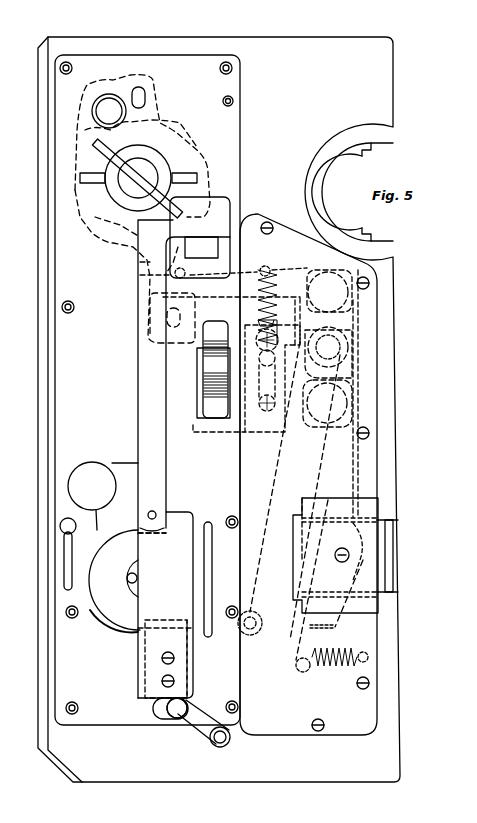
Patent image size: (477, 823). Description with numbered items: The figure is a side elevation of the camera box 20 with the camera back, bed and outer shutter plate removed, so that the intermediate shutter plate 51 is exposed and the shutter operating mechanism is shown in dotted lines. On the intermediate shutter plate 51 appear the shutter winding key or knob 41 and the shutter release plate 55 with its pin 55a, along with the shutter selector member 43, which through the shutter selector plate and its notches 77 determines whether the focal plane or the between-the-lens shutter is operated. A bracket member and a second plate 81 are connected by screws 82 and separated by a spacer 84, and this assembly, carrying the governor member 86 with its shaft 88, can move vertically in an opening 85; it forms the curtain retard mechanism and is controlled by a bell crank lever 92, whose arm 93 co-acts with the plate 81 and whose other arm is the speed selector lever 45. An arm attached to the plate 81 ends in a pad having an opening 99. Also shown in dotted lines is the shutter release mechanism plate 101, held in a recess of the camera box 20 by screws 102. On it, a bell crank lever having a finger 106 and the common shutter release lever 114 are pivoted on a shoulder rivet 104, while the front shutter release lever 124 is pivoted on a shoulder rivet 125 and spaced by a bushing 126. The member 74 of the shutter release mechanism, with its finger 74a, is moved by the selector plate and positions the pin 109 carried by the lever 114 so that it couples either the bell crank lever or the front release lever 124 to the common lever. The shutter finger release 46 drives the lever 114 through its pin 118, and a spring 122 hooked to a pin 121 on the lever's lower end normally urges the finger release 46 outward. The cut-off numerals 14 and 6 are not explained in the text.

The camera box 20 is at (370, 87).
The housing 14 is at (471, 113).
The lock body 6 is at (472, 142).
The intermediate shutter plate 51 is at (238, 158).
The shutter release mechanism plate 101 is at (362, 712).
The screws 102 is at (369, 682).
The shutter winding key or knob 41 is at (140, 183).
The shutter release plate 55 is at (160, 127).
The pin 55a is at (140, 264).
The spacer 84 is at (167, 628).
The governor member 86 is at (118, 536).
The opening 99 is at (218, 237).
The finger 106 is at (226, 290).
The shutter selector member 43 is at (207, 370).
The notches 77 is at (220, 393).
The finger 74a is at (222, 428).
The member of the shutter release mechanism 74 is at (270, 438).
The shoulder rivet 104 is at (350, 305).
The pin 109 is at (358, 352).
The shoulder rivet 125 is at (350, 410).
The common shutter release lever 114 is at (347, 482).
The front shutter release lever 124 is at (282, 498).
The pin 118 is at (334, 557).
The shutter finger release 46 is at (389, 560).
The second plate 81 is at (142, 604).
The shaft 88 is at (140, 578).
The screws 82 is at (162, 681).
The opening 85 is at (190, 643).
The arm 93 is at (158, 707).
The bell crank lever 92 is at (175, 714).
The speed selector lever 45 is at (205, 728).
The bushing 126 is at (255, 636).
The pin 121 is at (297, 666).
The spring 122 is at (322, 668).